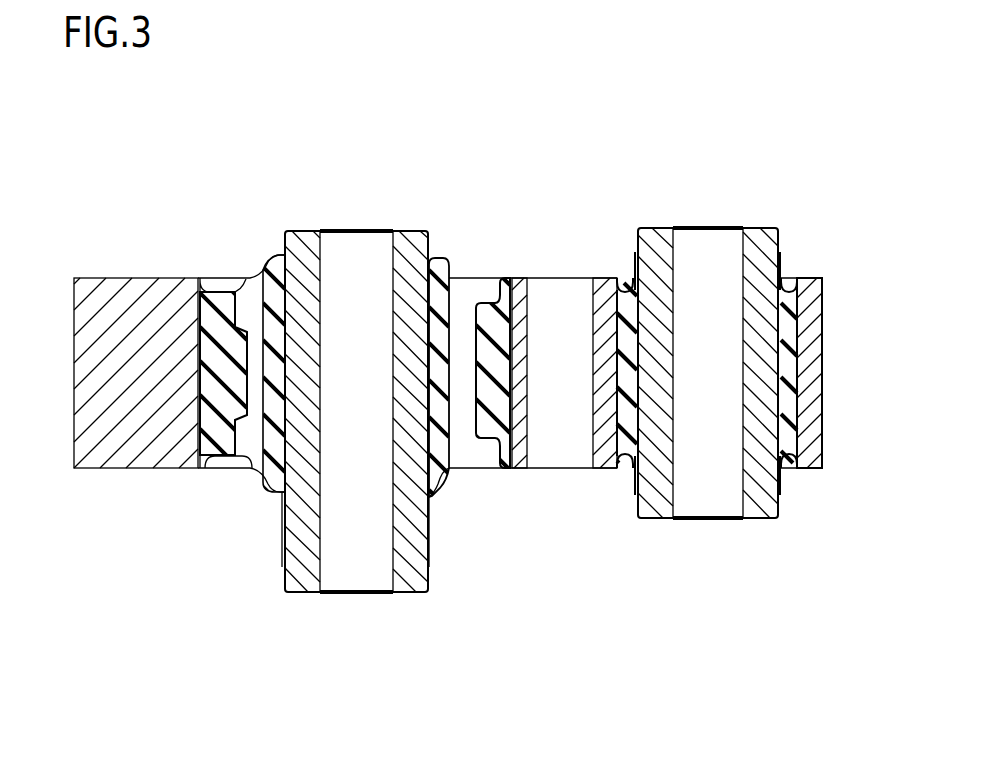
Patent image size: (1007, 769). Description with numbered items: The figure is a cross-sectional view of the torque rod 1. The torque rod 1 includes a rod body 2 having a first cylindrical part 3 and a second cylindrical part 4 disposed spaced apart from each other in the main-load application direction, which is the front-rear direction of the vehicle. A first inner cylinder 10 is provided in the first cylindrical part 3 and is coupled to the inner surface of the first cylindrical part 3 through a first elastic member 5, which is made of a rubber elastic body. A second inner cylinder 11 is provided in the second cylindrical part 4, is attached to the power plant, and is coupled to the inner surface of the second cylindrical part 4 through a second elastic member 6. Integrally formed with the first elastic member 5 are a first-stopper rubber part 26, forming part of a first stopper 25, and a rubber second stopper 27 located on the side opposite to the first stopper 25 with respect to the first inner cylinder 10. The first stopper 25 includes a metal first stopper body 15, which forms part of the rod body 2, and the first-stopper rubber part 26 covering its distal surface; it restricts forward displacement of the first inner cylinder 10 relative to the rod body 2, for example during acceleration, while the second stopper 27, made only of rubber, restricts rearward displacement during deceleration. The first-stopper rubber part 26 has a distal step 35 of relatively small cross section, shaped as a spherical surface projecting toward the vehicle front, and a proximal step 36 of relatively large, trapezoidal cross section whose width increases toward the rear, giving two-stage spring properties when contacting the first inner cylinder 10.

The torque rod 1 is at (765, 117).
The rod body 2 is at (518, 265).
The first cylindrical part 3 is at (237, 265).
The second cylindrical part 4 is at (805, 262).
The first elastic member 5 is at (439, 262).
The second elastic member 6 is at (625, 290).
The first inner cylinder 10 is at (300, 238).
The second inner cylinder 11 is at (653, 245).
The first stopper body 15 is at (135, 440).
The first stopper 25 is at (278, 590).
The first-stopper rubber part 26 is at (221, 424).
The second stopper 27 is at (492, 430).
The distal step 35 is at (233, 375).
The proximal step 36 is at (227, 438).